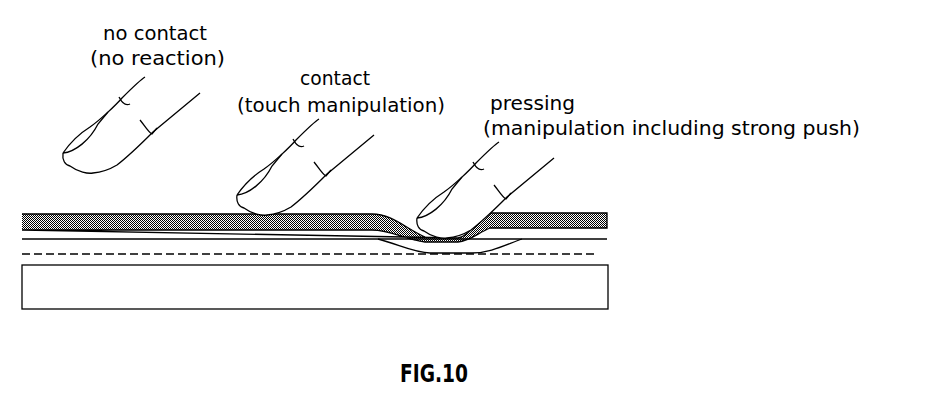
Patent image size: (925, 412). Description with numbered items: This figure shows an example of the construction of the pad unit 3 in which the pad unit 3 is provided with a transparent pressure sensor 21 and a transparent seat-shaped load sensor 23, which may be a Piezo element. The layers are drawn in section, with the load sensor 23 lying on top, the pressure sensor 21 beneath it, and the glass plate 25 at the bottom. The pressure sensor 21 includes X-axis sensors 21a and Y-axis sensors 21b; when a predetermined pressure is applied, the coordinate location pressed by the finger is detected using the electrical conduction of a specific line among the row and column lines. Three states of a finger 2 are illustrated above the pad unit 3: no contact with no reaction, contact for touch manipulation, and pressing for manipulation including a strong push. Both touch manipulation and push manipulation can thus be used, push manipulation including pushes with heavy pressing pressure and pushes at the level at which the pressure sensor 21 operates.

The finger 2 is at (108, 112).
The pad unit 3 is at (418, 258).
The pressure sensor 21 is at (400, 269).
The X-axis sensors 21a is at (600, 240).
The Y-axis sensors 21b is at (595, 254).
The load sensor 23 is at (607, 218).
The glass plate 25 is at (608, 290).